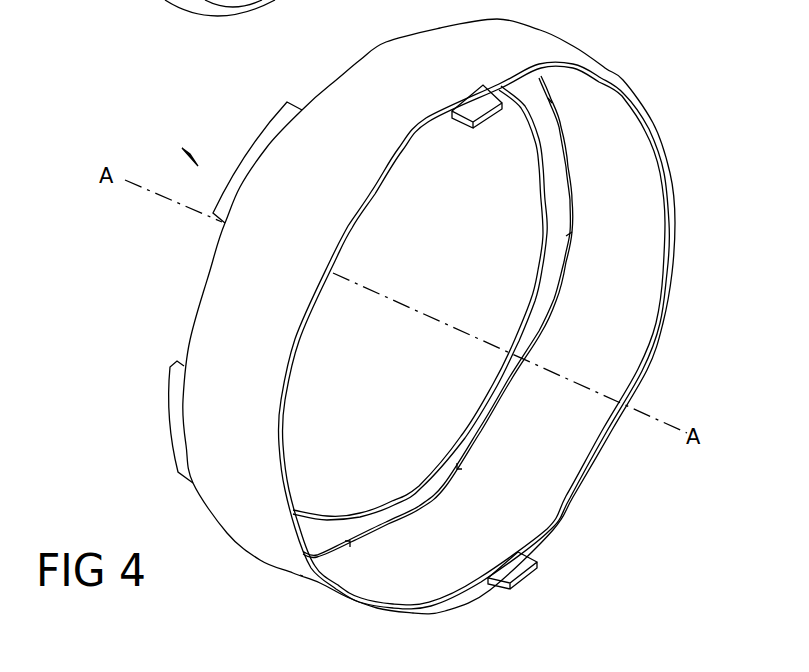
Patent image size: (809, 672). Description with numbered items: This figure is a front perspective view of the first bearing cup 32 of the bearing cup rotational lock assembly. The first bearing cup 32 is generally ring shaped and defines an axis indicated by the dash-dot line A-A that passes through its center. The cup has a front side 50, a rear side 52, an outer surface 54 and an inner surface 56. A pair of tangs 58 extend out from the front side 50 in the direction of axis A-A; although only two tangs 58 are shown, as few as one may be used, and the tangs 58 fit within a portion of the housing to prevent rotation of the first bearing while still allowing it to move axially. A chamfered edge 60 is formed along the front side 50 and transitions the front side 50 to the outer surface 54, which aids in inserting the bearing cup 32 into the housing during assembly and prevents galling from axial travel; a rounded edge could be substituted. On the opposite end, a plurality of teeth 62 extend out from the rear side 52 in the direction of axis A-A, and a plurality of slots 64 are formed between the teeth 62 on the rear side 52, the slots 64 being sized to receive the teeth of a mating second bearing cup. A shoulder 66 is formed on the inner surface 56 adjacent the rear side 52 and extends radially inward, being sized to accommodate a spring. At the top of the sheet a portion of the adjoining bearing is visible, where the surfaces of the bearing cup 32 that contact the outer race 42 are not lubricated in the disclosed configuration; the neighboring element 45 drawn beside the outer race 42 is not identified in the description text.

The first bearing cup 32 is at (182, 150).
The outer race 42 is at (229, 0).
The housing portion 45 is at (160, 0).
The front side 50 is at (397, 313).
The rear side 52 is at (328, 83).
The outer surface 54 is at (528, 55).
The inner surface 56 is at (533, 479).
The tangs 58 is at (472, 103).
The chamfered edge 60 is at (318, 572).
The teeth 62 is at (268, 140).
The slots 64 is at (372, 52).
The shoulder 66 is at (557, 165).